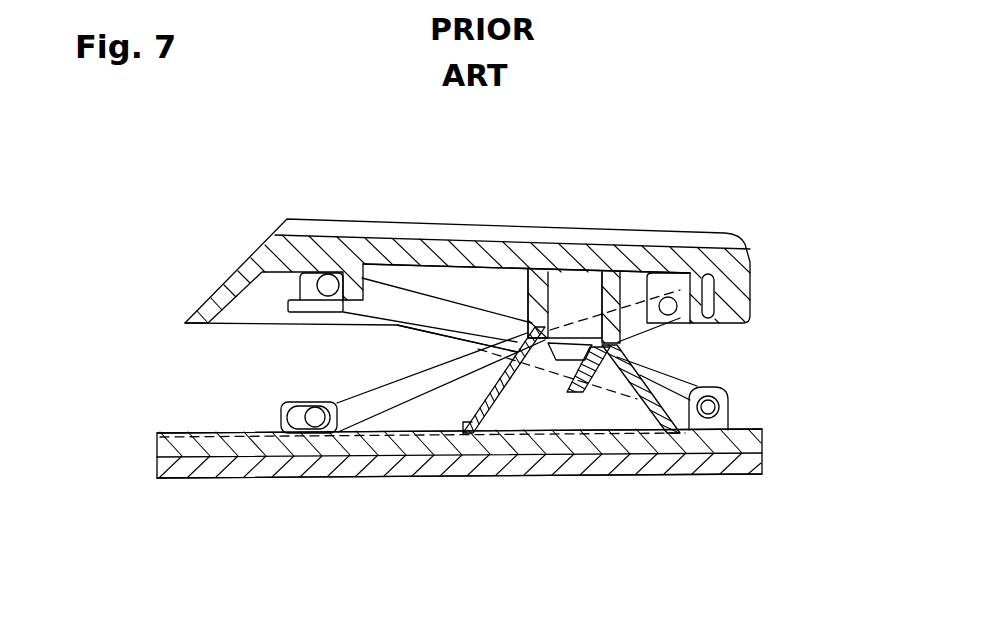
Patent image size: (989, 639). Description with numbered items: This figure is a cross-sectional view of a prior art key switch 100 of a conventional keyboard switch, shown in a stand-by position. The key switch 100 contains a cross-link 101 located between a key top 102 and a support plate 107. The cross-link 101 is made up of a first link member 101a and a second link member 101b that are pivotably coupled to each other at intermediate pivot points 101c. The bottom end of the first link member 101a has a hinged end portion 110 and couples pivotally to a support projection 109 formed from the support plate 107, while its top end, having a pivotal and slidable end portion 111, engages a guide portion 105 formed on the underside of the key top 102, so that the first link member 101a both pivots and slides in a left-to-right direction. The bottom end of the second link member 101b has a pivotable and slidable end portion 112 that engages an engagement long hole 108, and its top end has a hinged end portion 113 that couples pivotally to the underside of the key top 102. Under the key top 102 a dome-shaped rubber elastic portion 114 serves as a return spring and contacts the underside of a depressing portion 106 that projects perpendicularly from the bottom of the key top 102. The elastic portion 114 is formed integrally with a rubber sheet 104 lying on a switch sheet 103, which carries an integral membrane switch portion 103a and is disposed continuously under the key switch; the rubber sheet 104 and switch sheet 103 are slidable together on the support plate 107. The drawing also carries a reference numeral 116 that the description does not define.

The key switch 100 is at (187, 250).
The cross-link 101 is at (441, 441).
The first link member 101a is at (443, 325).
The second link member 101b is at (480, 548).
The intermediate pivot points 101c is at (517, 332).
The key top 102 is at (668, 260).
The switch sheet 103 is at (165, 445).
The membrane switch portion 103a is at (588, 454).
The rubber sheet 104 is at (168, 432).
The guide portion 105 is at (300, 272).
The depressing portion 106 is at (568, 320).
The support plate 107 is at (728, 476).
The engagement long hole 108 is at (293, 405).
The support projection 109 is at (733, 412).
The hinged end portion 110 is at (712, 405).
The pivotal and slidable end portion 111 is at (330, 299).
The pivotable and slidable end portion 112 is at (300, 430).
The hinged end portion 113 is at (675, 304).
The elastic portion 114 is at (517, 385).
The elastic member 116 is at (450, 294).